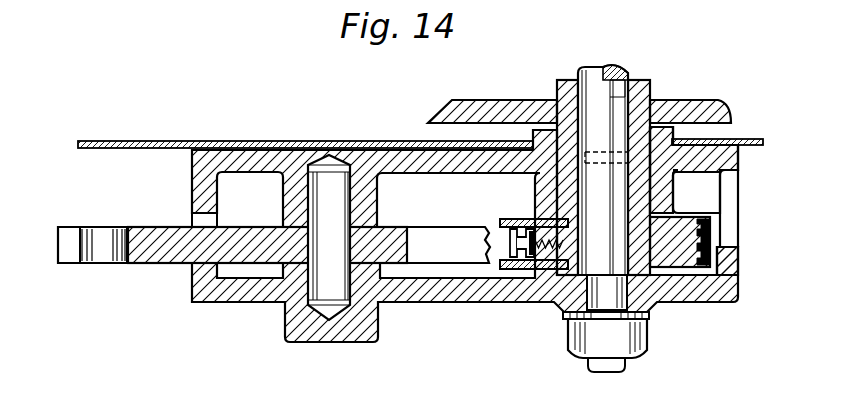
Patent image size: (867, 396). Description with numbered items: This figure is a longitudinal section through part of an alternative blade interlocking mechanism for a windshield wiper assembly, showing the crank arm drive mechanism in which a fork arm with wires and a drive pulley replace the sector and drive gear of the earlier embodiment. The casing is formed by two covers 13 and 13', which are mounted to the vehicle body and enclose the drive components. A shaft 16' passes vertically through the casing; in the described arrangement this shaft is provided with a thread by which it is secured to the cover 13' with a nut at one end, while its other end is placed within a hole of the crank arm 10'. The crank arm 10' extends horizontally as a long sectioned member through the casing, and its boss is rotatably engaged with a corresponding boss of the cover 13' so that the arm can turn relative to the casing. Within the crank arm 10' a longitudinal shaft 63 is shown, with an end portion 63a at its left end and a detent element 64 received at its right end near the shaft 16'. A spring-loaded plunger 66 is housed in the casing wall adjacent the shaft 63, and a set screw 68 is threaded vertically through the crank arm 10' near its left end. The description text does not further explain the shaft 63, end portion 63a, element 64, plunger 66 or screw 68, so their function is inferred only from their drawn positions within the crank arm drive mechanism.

The crank arm 10' is at (590, 95).
The cover 13 is at (714, 187).
The cover 13' is at (750, 262).
The shaft 16' is at (625, 211).
The shaft 63 is at (437, 252).
The shaft end portion 63a is at (104, 250).
The detent pin 64 is at (678, 250).
The spring biased plunger 66 is at (529, 262).
The set screw 68 is at (338, 183).